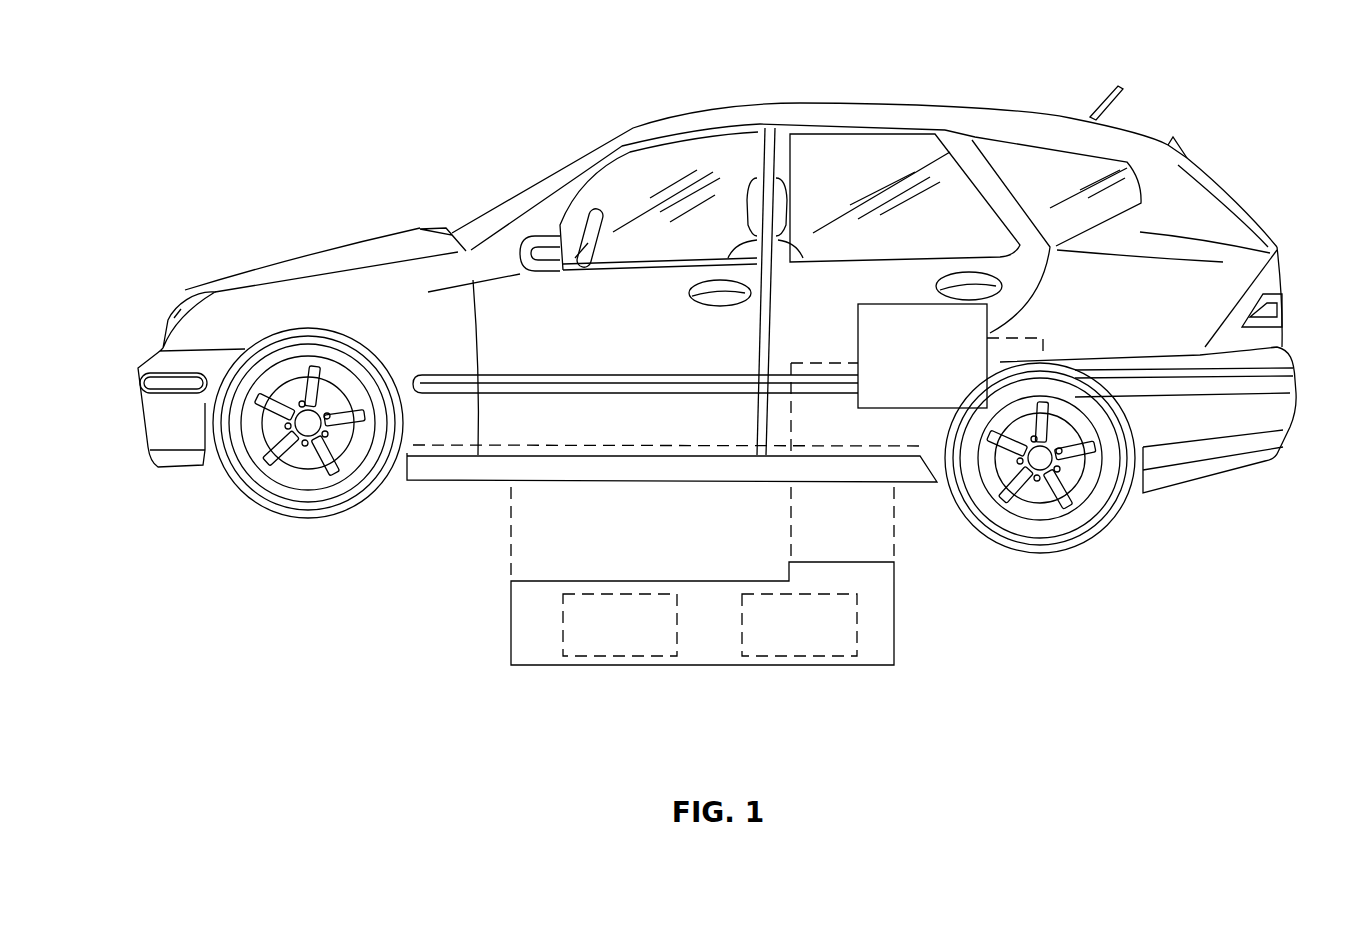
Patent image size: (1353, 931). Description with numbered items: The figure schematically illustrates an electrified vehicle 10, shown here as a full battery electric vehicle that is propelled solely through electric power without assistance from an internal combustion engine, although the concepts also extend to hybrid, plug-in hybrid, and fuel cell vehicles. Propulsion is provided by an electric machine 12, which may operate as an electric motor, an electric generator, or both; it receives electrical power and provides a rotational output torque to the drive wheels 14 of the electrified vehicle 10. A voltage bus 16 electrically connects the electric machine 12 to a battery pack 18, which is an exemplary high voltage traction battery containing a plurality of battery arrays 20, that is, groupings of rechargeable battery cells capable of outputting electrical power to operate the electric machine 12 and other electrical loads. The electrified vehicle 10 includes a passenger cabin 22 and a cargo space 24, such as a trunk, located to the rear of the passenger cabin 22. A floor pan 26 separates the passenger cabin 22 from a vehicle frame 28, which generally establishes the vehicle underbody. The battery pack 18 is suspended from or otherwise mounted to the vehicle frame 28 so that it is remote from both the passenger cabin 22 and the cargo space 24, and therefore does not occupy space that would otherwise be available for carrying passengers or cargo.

The electrified vehicle 10 is at (1197, 122).
The electric machine 12 is at (910, 367).
The drive wheels 14 is at (290, 505).
The voltage bus 16 is at (841, 362).
The battery pack 18 is at (703, 672).
The battery arrays 20 is at (605, 638).
The passenger cabin 22 is at (688, 160).
The cargo space 24 is at (1216, 182).
The floor pan 26 is at (590, 445).
The vehicle frame 28 is at (676, 470).